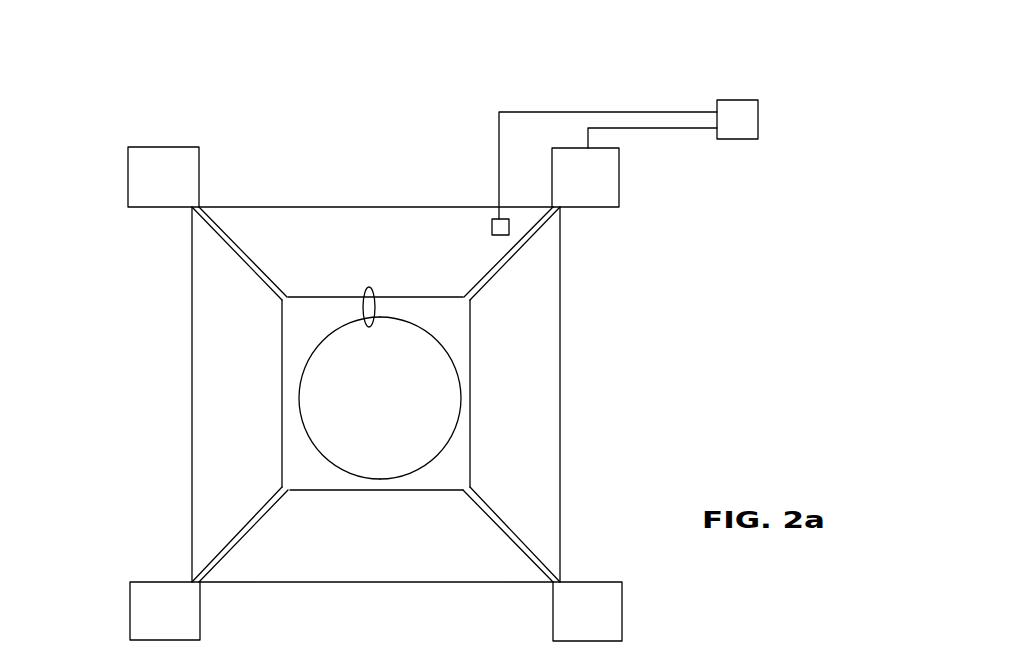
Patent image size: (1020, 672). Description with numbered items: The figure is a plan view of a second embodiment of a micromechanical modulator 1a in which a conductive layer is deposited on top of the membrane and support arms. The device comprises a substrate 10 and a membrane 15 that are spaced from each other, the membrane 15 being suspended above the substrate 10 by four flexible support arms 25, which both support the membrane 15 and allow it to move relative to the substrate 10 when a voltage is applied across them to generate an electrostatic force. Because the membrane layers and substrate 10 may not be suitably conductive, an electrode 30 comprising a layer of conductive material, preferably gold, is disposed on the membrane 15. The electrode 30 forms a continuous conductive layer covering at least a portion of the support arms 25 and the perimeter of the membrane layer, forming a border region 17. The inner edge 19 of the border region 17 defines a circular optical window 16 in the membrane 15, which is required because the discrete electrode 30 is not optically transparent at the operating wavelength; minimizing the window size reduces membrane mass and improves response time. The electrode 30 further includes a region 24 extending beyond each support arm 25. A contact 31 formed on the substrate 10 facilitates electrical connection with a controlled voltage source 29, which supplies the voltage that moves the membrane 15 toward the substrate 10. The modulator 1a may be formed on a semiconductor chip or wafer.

The micromechanical modulator 1a is at (95, 67).
The substrate 10 is at (362, 568).
The membrane 15 is at (460, 337).
The optical window 16 is at (323, 380).
The border region 17 is at (368, 287).
The inner edge 19 is at (457, 382).
The region 24 is at (161, 147).
The support arms 25 is at (244, 252).
The controlled voltage source 29 is at (740, 100).
The electrode 30 is at (143, 172).
The contact 31 is at (492, 226).